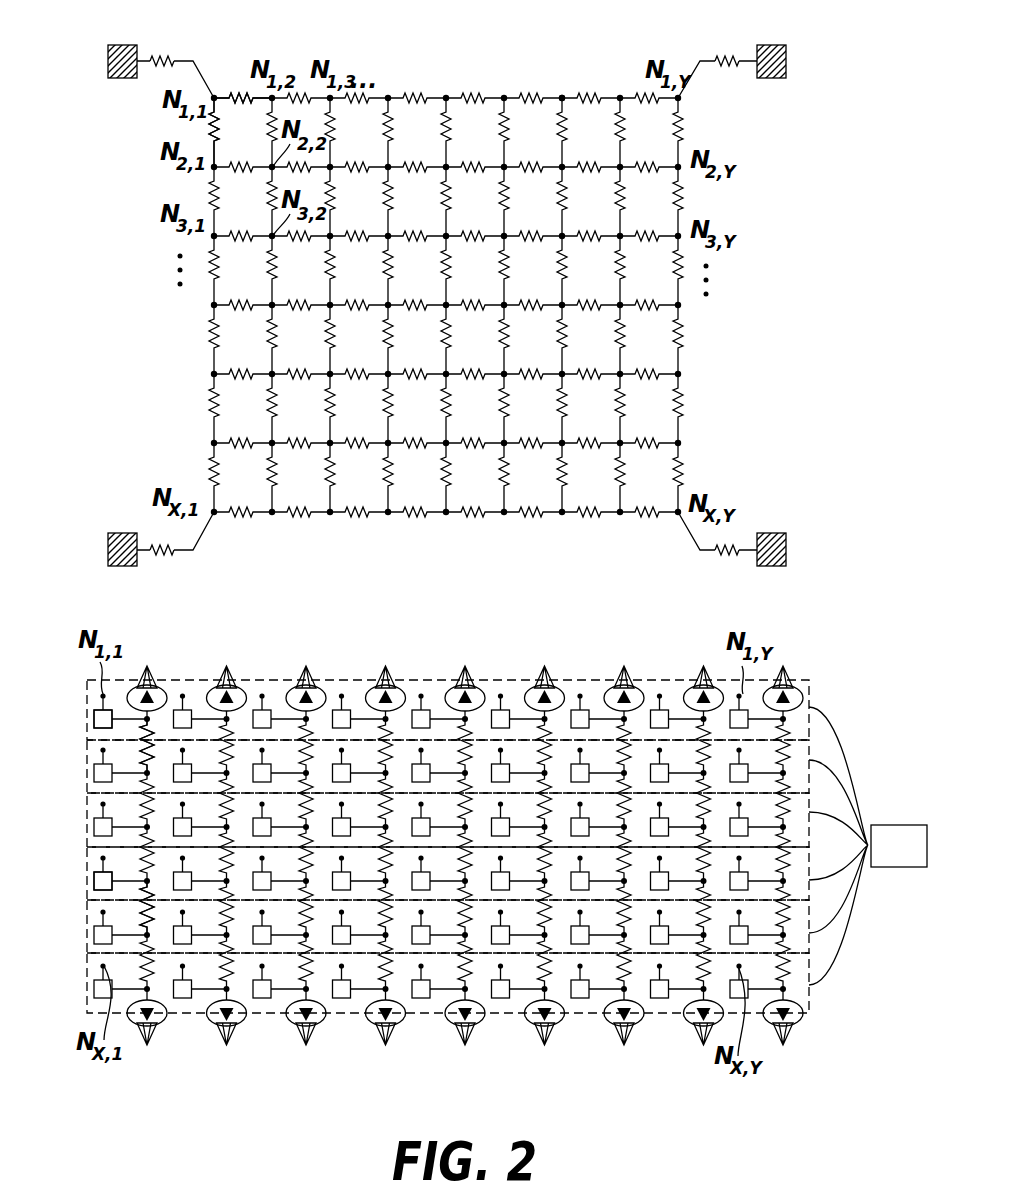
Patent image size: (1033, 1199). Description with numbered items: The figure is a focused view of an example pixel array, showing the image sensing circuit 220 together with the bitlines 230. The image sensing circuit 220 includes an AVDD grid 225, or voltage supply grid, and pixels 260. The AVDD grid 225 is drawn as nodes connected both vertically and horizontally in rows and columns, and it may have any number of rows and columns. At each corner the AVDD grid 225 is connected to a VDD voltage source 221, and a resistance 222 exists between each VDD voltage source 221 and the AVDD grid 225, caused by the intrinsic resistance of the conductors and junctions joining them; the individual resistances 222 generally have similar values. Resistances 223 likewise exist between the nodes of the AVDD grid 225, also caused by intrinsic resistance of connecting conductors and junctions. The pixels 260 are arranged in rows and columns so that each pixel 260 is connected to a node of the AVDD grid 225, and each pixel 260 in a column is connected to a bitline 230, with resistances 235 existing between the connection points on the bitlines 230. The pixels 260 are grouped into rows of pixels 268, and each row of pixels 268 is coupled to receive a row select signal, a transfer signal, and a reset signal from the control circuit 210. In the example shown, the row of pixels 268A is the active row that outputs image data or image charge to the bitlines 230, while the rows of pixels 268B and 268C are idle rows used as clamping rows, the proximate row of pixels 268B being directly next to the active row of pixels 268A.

The control circuit 210 is at (918, 858).
The image sensing circuit 220 is at (468, 76).
The VDD voltage source 221 is at (122, 45).
The resistance 222 is at (170, 58).
The resistance 223 is at (246, 95).
The AVDD grid 225 is at (562, 90).
The bitline 230 is at (150, 676).
The resistance 235 is at (145, 742).
The pixel 260 is at (94, 722).
The row of pixels 268 is at (87, 1000).
The active row of pixels 268A is at (87, 944).
The proximate row of pixels 268B is at (87, 860).
The idle row of pixels 268C is at (87, 814).